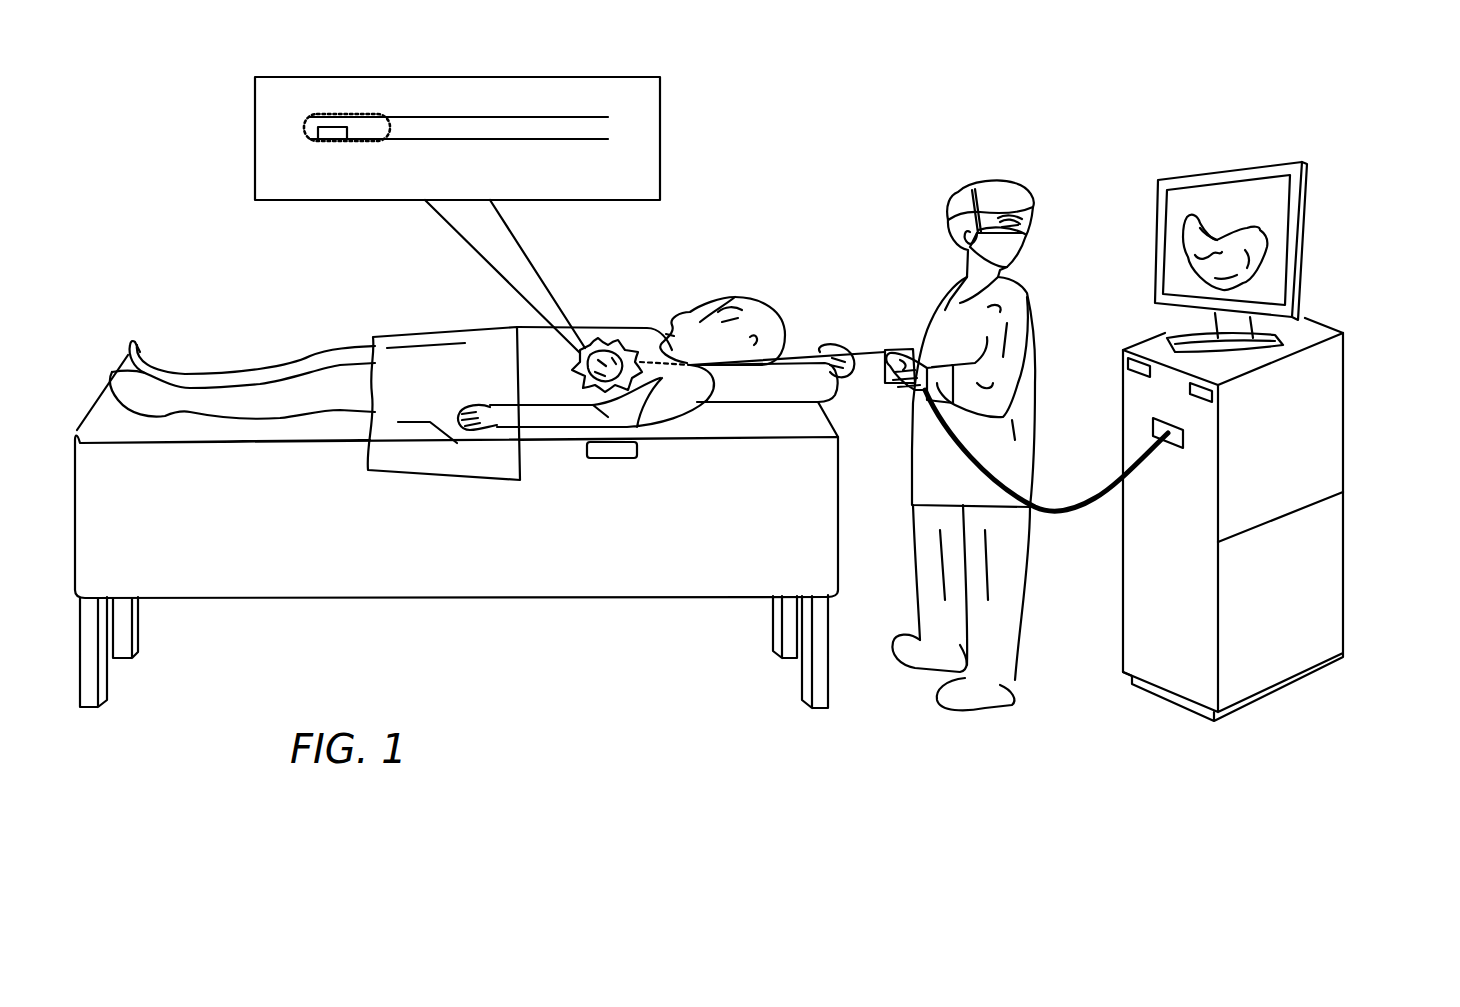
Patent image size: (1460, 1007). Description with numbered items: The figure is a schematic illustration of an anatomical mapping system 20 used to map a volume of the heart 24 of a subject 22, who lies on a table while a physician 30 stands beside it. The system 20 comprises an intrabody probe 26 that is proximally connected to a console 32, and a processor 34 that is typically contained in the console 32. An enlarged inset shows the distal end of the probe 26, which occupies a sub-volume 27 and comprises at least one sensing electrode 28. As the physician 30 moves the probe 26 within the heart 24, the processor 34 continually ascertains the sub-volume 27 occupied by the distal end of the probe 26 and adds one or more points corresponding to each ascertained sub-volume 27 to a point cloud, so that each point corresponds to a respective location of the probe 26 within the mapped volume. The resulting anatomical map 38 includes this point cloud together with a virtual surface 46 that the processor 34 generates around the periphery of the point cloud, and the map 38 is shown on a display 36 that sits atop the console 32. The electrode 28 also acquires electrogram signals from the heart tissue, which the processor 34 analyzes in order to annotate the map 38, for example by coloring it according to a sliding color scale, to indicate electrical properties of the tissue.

The anatomical mapping system 20 is at (1406, 337).
The subject 22 is at (762, 298).
The heart 24 is at (608, 348).
The intrabody probe 26 is at (460, 140).
The sub-volume 27 is at (338, 115).
The sensing electrode 28 is at (333, 140).
The physician 30 is at (1005, 180).
The console 32 is at (1328, 328).
The processor 34 is at (1337, 405).
The display 36 is at (1243, 167).
The anatomical map 38 is at (1201, 189).
The virtual surface 46 is at (1237, 275).